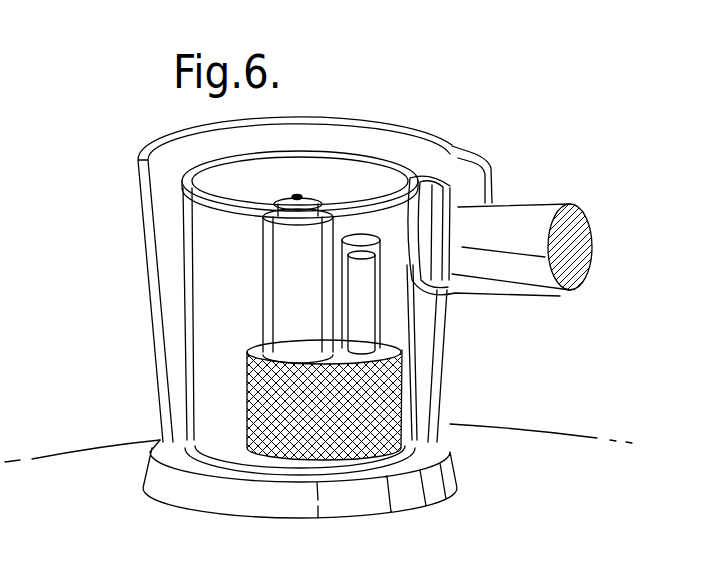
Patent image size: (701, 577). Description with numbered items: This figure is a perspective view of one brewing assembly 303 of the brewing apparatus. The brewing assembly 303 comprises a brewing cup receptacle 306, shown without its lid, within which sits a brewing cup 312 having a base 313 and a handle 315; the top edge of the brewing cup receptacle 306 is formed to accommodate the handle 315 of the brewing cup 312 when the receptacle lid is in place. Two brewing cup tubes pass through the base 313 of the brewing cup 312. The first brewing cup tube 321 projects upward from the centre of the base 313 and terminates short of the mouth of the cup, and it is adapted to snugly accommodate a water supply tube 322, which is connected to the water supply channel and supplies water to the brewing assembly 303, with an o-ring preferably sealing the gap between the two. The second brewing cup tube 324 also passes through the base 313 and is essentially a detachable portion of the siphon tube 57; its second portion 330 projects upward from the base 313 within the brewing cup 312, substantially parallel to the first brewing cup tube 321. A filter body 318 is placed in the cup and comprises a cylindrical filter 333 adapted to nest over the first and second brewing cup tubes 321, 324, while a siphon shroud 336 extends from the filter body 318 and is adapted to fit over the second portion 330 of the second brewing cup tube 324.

The brewing assembly 303 is at (148, 408).
The brewing cup receptacle 306 is at (145, 207).
The brewing cup 312 is at (392, 162).
The base 313 is at (230, 448).
The handle 315 is at (527, 223).
The filter body 318 is at (398, 344).
The first brewing cup tube 321 is at (263, 290).
The water supply tube 322 is at (304, 200).
The second brewing cup tube 324 is at (398, 324).
The second portion 330 is at (378, 311).
The cylindrical filter 333 is at (400, 400).
The siphon shroud 336 is at (340, 297).
The siphon tube 57 is at (367, 283).